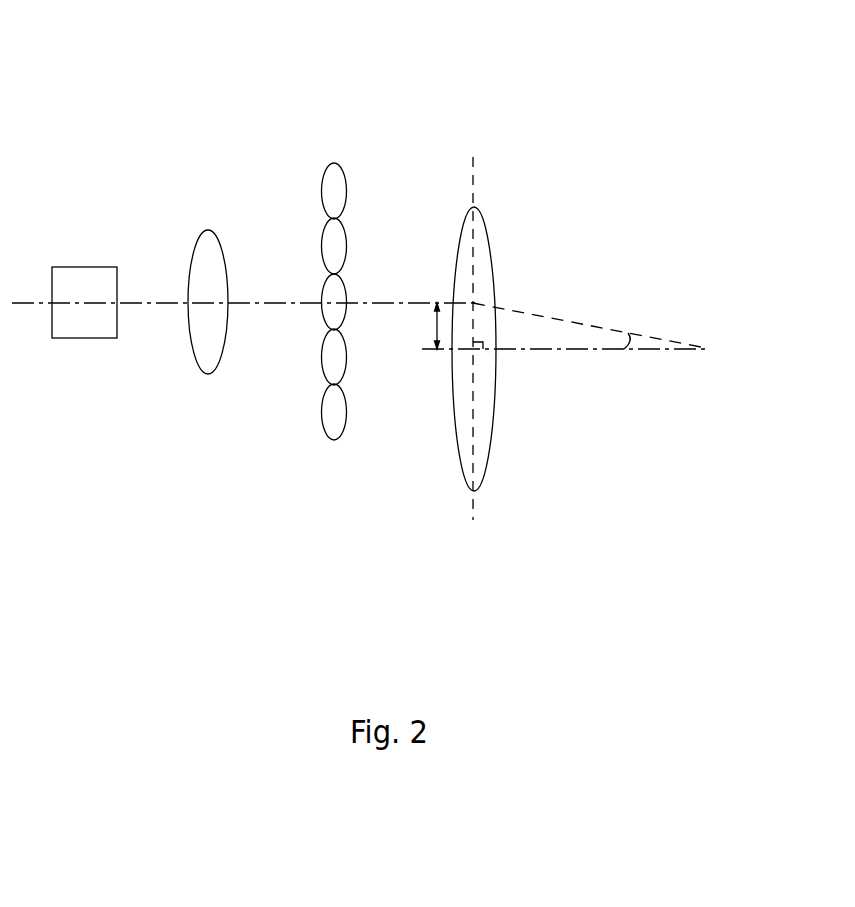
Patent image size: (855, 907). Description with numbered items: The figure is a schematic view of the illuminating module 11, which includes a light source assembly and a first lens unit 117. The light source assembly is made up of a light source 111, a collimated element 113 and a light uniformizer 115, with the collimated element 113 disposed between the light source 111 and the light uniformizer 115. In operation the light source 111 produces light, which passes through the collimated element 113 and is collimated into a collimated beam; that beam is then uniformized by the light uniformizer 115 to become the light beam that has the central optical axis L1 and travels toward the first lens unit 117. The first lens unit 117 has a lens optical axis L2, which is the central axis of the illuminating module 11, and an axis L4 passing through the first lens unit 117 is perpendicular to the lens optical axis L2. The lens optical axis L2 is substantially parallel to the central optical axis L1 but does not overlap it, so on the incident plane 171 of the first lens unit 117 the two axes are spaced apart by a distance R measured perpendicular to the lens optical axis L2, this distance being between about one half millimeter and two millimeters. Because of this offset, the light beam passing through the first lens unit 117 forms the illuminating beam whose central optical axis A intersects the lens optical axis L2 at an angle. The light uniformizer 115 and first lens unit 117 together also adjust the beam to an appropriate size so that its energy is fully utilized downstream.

The illuminating module 11 is at (117, 88).
The light source 111 is at (81, 325).
The collimated element 113 is at (212, 348).
The light uniformizer 115 is at (335, 412).
The first lens unit 117 is at (475, 430).
The incident plane 171 is at (450, 380).
The central optical axis L1 is at (400, 302).
The lens optical axis L2 is at (550, 349).
The axis L4 is at (475, 160).
The distance R is at (433, 328).
The central optical axis of the illuminating beam A is at (652, 340).